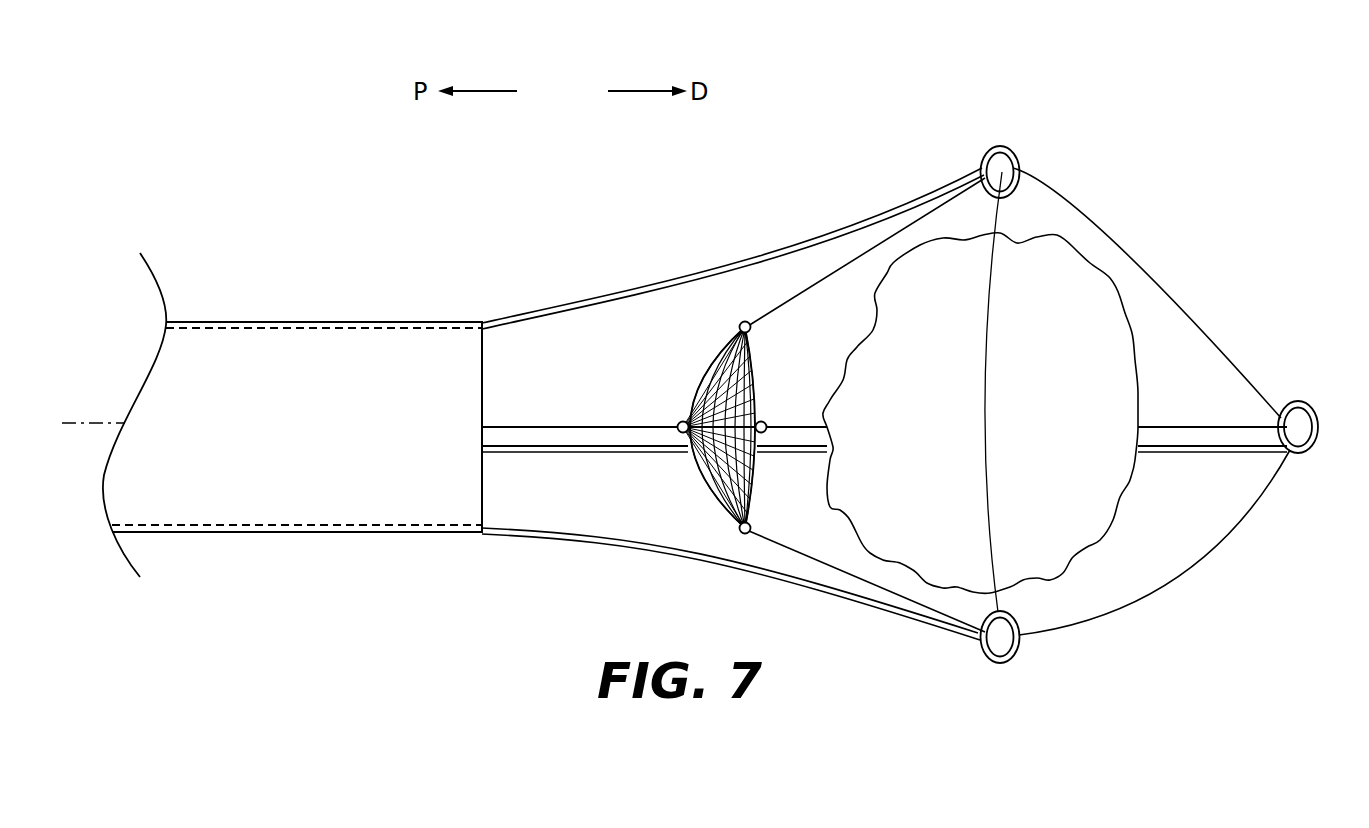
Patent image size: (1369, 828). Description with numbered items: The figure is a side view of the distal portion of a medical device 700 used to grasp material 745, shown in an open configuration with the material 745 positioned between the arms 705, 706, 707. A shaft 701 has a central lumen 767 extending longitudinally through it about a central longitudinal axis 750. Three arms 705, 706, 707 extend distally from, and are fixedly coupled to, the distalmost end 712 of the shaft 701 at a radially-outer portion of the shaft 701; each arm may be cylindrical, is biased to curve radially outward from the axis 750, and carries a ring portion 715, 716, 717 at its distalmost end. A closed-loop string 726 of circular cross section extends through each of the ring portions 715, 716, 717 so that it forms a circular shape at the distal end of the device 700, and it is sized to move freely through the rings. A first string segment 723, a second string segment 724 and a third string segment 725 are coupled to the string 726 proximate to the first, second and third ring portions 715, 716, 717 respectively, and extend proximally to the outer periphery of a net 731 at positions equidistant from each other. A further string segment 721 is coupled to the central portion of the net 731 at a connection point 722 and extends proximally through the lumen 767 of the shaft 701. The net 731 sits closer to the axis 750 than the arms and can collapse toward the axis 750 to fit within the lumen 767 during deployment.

The medical device 700 is at (942, 82).
The shaft 701 is at (308, 322).
The arm 705 is at (620, 538).
The arm 706 is at (719, 264).
The arm 707 is at (568, 448).
The distalmost end 712 is at (487, 298).
The first ring portion 715 is at (1007, 663).
The second ring portion 716 is at (1014, 147).
The third ring portion 717 is at (1295, 456).
The string segment 721 is at (560, 428).
The connection point 722 is at (682, 403).
The first string segment 723 is at (778, 540).
The second string segment 724 is at (820, 284).
The third string segment 725 is at (778, 425).
The string 726 is at (1198, 326).
The net 731 is at (715, 353).
The material 745 is at (1094, 290).
The central longitudinal axis 750 is at (73, 425).
The central lumen 767 is at (368, 512).